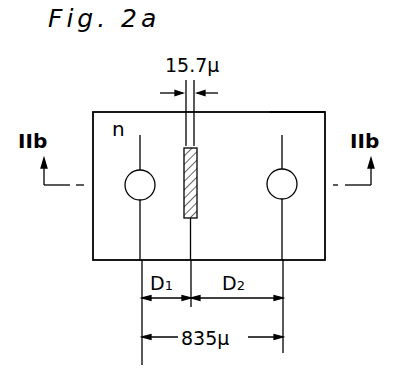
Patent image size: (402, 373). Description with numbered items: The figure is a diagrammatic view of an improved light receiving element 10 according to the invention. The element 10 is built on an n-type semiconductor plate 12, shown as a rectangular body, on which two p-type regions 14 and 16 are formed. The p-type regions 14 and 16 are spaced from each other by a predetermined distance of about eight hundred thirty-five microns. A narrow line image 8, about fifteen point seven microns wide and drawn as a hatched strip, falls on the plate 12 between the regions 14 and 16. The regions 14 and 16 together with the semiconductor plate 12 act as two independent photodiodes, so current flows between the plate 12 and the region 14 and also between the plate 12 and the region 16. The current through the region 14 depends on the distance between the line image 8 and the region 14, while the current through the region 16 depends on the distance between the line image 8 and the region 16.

The light receiving element 10 is at (263, 88).
The n-type semiconductor plate 12 is at (303, 120).
The line image 8 is at (197, 175).
The p-type region 14 is at (130, 195).
The p-type region 16 is at (290, 195).